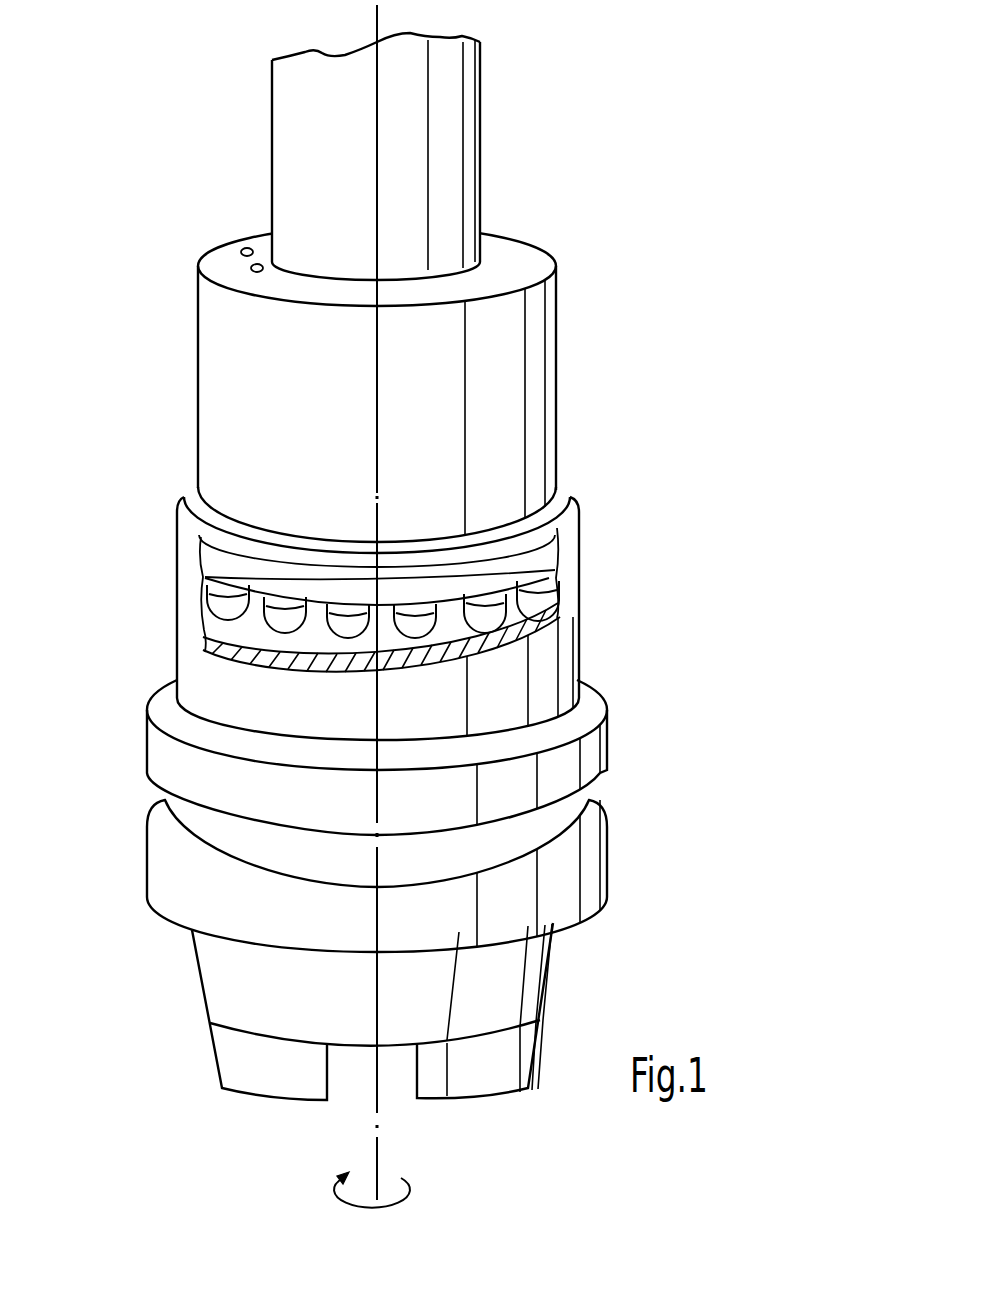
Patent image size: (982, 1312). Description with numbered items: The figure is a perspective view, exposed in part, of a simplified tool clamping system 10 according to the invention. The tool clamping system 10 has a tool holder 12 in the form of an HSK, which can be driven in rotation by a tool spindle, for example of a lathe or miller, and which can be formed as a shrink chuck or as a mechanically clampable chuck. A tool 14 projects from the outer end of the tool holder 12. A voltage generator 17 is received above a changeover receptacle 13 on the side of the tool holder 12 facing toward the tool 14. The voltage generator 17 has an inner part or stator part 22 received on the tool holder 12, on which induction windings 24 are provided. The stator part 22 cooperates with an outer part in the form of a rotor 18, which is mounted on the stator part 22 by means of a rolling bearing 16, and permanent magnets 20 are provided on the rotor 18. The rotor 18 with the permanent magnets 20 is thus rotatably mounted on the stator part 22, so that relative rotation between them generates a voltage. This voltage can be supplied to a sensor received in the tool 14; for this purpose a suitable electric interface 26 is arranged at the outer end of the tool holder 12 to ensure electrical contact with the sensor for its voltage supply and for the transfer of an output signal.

The tool clamping system 10 is at (445, 606).
The tool holder 12 is at (590, 702).
The changeover receptacle 13 is at (600, 788).
The tool 14 is at (308, 145).
The rolling bearing 16 is at (393, 384).
The voltage generator 17 is at (446, 583).
The rotor 18 is at (567, 548).
The permanent magnets 20 is at (203, 562).
The stator part 22 is at (210, 630).
The induction windings 24 is at (560, 605).
The electric interface 26 is at (243, 260).